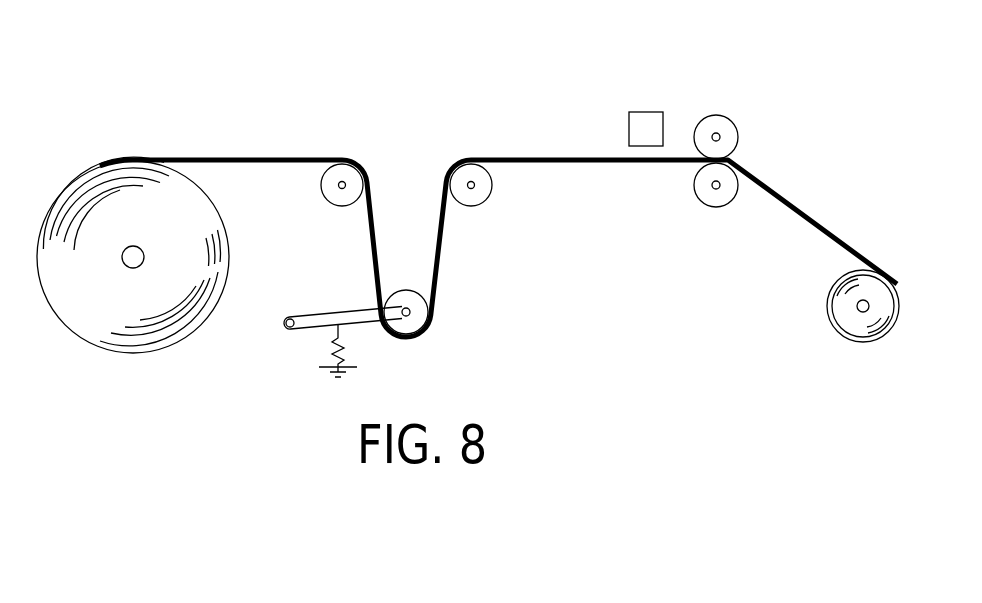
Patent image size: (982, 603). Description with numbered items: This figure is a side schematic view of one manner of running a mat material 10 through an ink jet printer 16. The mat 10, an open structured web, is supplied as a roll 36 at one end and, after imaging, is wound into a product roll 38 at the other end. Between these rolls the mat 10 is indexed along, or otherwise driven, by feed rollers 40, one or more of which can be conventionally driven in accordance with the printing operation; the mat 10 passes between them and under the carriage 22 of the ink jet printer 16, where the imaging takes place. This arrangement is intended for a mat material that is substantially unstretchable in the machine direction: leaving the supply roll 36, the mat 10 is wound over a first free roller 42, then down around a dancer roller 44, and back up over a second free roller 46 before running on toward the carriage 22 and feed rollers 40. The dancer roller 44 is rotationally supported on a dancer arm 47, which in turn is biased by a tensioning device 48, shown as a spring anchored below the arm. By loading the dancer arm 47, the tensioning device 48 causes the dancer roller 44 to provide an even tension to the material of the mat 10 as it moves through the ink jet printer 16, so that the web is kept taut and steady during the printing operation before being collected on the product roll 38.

The mat material 10 is at (233, 158).
The ink jet printing apparatus 16 is at (716, 152).
The carriage 22 is at (645, 118).
The roll 36 is at (83, 325).
The product roll 38 is at (845, 327).
The feed rollers 40 is at (732, 137).
The first free roller 42 is at (333, 197).
The dancer roller 44 is at (406, 297).
The second free roller 46 is at (480, 195).
The dancer arm 47 is at (310, 320).
The tensioning device 48 is at (334, 348).